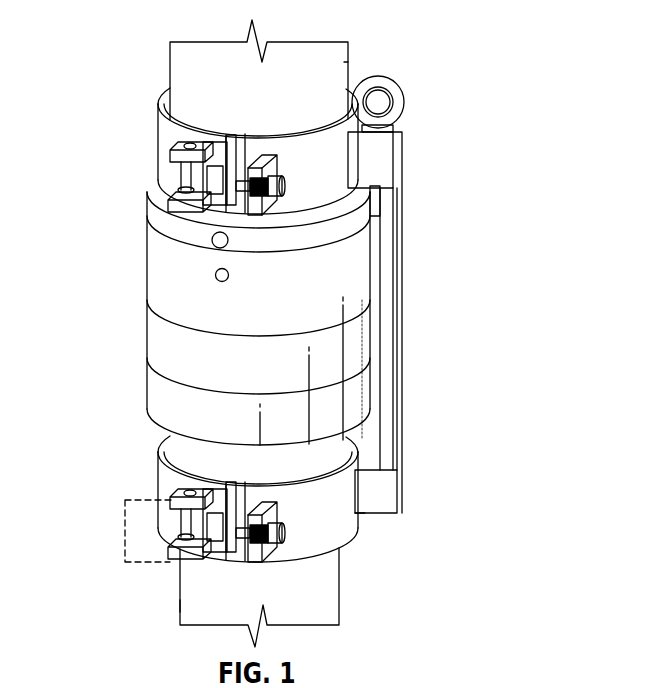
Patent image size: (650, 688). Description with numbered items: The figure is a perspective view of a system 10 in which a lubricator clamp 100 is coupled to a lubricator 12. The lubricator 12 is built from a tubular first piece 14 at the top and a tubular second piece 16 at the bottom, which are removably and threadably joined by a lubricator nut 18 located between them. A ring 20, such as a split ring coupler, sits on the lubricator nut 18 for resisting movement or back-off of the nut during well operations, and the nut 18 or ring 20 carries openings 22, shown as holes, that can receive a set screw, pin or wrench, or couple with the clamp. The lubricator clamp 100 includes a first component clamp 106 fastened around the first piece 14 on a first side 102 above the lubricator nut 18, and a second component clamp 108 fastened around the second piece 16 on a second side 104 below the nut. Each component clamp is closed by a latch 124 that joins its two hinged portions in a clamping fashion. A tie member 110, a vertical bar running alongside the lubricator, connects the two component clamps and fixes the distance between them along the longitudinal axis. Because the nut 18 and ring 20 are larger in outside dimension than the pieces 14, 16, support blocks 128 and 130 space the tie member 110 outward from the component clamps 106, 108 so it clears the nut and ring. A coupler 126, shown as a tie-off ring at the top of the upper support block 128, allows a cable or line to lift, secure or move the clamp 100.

The system 10 is at (445, 41).
The lubricator 12 is at (339, 607).
The first piece 14 is at (170, 72).
The second piece 16 is at (180, 607).
The lubricator nut 18 is at (147, 335).
The ring 20 is at (147, 215).
The openings 22 is at (230, 277).
The lubricator clamp 100 is at (435, 314).
The first side 102 is at (158, 138).
The second side 104 is at (158, 481).
The first component clamp 106 is at (348, 64).
The second component clamp 108 is at (357, 523).
The tie member 110 is at (405, 232).
The latch 124 is at (122, 500).
The coupler 126 is at (404, 100).
The support block 128 is at (385, 158).
The support block 130 is at (380, 497).